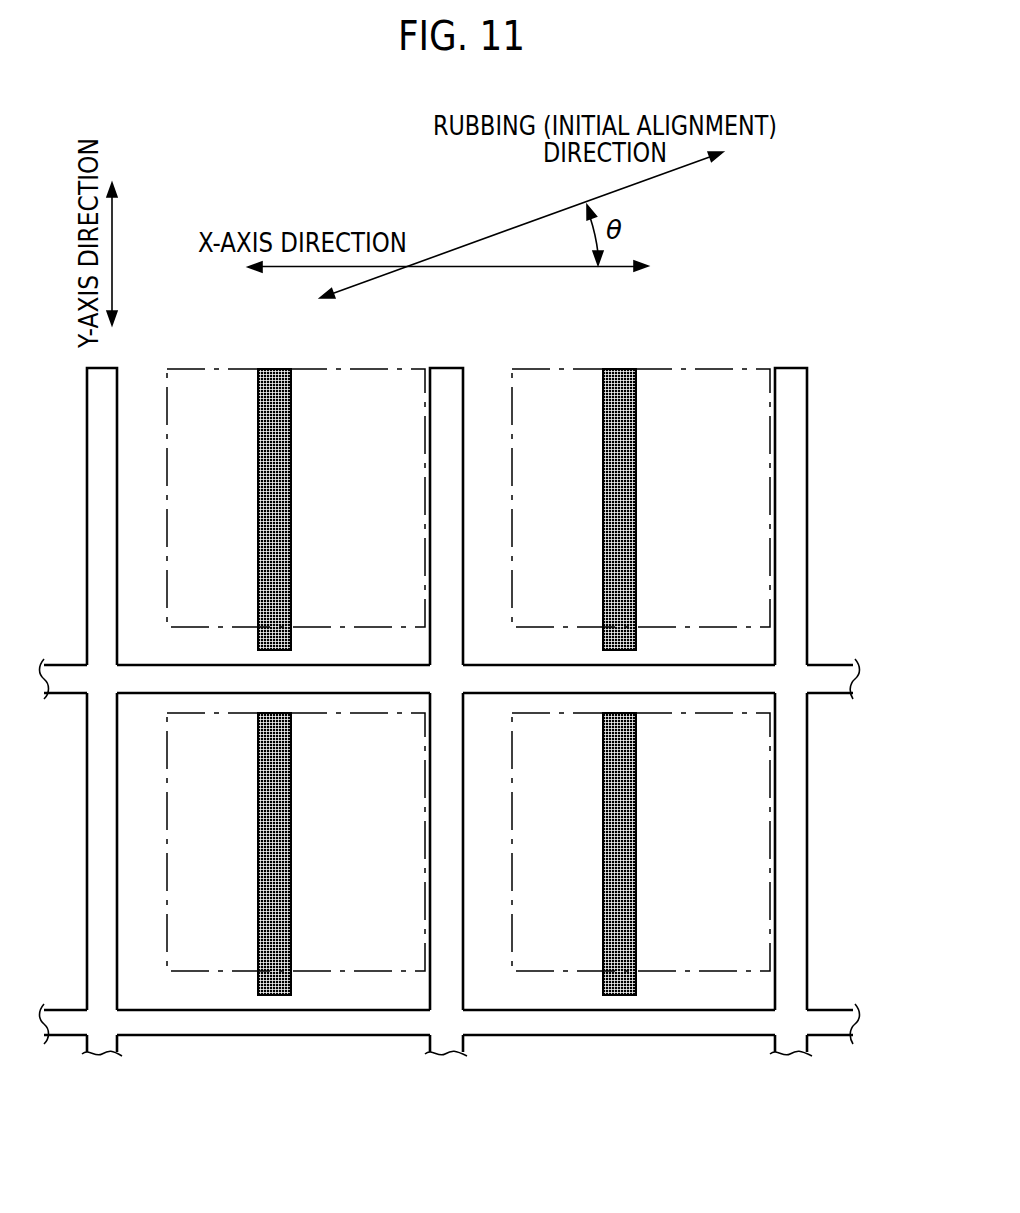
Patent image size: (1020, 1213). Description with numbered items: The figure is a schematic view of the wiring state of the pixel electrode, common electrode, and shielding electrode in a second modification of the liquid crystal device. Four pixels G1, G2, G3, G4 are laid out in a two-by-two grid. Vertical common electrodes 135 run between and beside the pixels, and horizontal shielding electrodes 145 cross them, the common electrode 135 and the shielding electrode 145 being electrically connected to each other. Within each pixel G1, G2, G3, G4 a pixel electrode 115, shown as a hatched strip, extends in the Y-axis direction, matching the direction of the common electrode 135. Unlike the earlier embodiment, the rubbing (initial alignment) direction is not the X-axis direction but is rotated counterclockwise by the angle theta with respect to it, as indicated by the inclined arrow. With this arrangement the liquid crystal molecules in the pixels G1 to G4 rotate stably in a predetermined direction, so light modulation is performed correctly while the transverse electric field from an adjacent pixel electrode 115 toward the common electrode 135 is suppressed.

The pixel electrode 115 is at (275, 465).
The common electrode 135 is at (103, 430).
The shielding electrode 145 is at (208, 681).
The pixel G1 is at (386, 368).
The pixel G2 is at (720, 368).
The pixel G3 is at (388, 972).
The pixel G4 is at (722, 972).